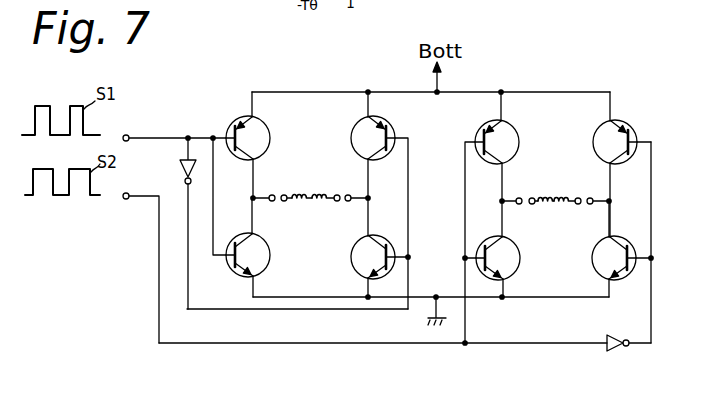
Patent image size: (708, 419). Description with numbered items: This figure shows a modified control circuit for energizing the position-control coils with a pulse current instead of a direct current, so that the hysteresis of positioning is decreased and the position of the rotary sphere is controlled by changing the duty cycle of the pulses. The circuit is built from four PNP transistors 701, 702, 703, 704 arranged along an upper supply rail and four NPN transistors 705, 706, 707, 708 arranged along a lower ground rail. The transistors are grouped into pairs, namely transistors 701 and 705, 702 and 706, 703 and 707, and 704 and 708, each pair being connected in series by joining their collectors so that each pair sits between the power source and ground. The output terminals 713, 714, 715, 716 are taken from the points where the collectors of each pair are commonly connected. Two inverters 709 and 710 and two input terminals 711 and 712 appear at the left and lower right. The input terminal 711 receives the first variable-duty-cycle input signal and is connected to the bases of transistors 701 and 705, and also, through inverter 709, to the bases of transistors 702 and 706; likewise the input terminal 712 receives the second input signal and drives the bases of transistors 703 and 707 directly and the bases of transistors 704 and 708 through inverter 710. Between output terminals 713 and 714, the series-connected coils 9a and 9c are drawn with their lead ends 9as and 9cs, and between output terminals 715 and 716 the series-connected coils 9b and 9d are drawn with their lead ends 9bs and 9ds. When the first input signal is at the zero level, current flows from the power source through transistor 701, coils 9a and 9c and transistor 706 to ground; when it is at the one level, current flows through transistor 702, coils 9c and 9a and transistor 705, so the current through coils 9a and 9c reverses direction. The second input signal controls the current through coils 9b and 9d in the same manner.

The PNP transistor 701 is at (247, 116).
The PNP transistor 702 is at (400, 118).
The PNP transistor 703 is at (500, 120).
The PNP transistor 704 is at (612, 119).
The NPN transistor 705 is at (241, 277).
The NPN transistor 706 is at (372, 280).
The NPN transistor 707 is at (508, 279).
The NPN transistor 708 is at (628, 240).
The inverter 709 is at (182, 184).
The inverter 710 is at (612, 352).
The input terminal 711 is at (130, 136).
The input terminal 712 is at (130, 194).
The output terminal 713 is at (275, 187).
The output terminal 714 is at (351, 187).
The output terminal 715 is at (519, 198).
The output terminal 716 is at (590, 198).
The coil terminal 9as is at (287, 194).
The coil terminal 9cs is at (334, 194).
The coil terminal 9bs is at (531, 197).
The coil terminal 9ds is at (578, 197).
The coil 9a is at (297, 204).
The coil 9b is at (543, 206).
The coil 9c is at (319, 204).
The coil 9d is at (565, 207).